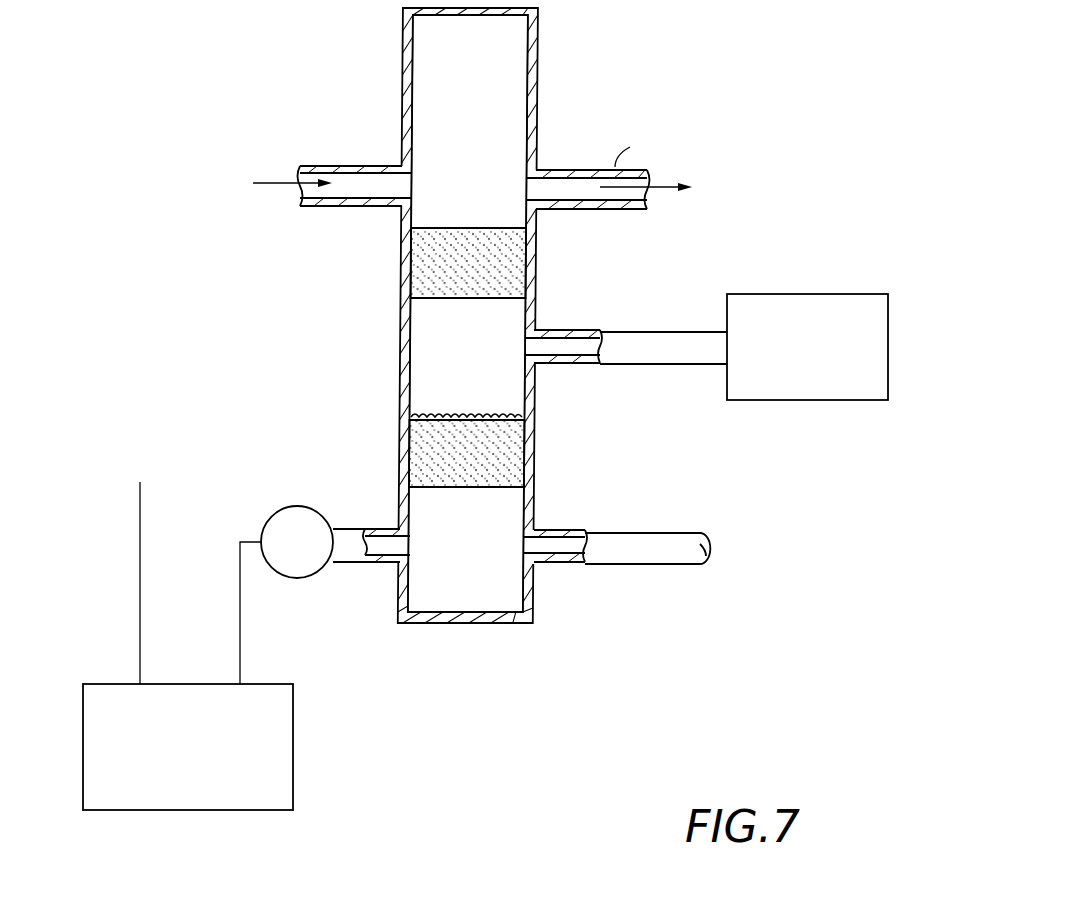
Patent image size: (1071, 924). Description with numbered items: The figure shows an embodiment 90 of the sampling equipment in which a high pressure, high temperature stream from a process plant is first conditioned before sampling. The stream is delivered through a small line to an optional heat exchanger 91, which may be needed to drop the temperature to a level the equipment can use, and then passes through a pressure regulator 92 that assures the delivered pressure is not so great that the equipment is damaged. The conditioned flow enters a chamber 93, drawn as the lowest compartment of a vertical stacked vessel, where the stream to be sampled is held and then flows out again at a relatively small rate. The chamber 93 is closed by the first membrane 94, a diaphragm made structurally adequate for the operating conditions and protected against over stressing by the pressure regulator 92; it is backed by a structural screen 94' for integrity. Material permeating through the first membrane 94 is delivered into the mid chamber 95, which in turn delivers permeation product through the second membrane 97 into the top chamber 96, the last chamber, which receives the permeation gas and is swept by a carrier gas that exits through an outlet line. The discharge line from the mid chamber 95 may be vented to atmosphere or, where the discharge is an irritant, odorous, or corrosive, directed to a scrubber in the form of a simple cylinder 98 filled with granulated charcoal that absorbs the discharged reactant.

The embodiment 90 is at (204, 74).
The heat exchanger 91 is at (293, 775).
The pressure regulator 92 is at (303, 578).
The chamber 93 is at (449, 570).
The first membrane 94 is at (506, 453).
The back up structural screen 94' is at (507, 400).
The mid chamber 95 is at (453, 367).
The top chamber 96 is at (456, 94).
The membrane 97 is at (430, 265).
The cylinder 98 is at (817, 401).